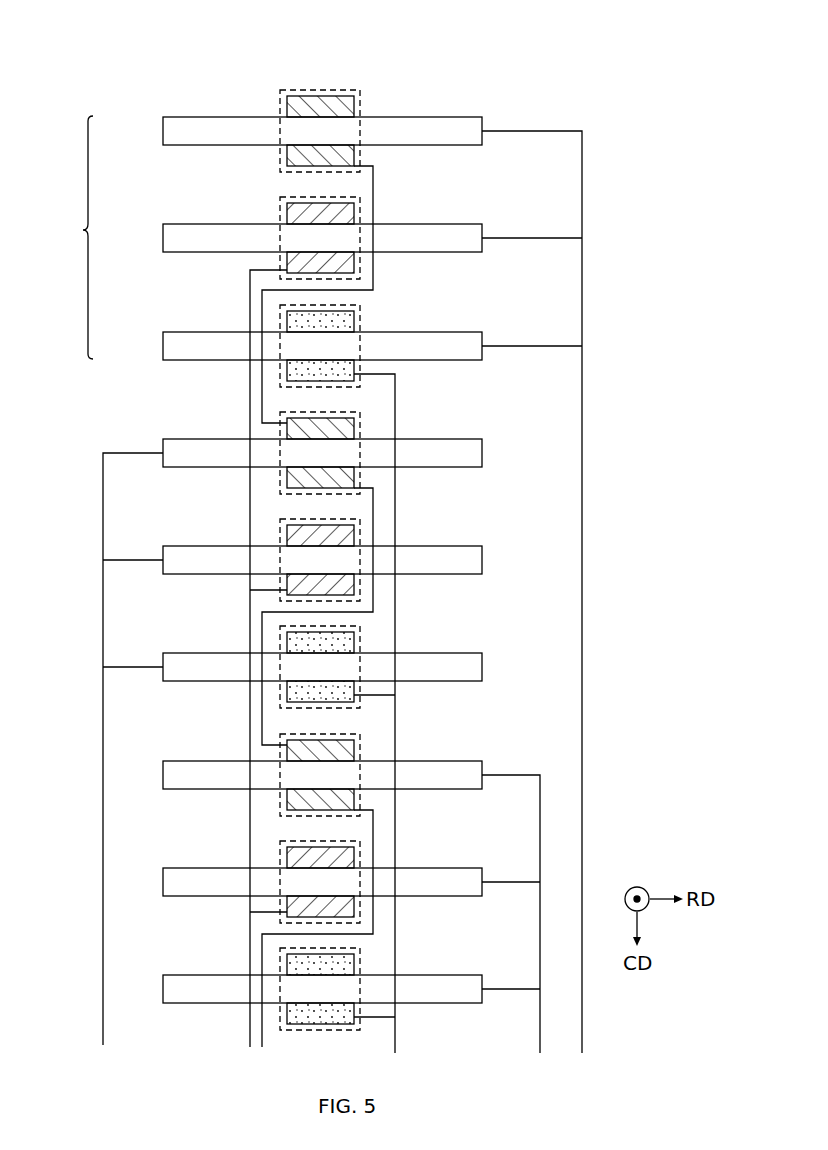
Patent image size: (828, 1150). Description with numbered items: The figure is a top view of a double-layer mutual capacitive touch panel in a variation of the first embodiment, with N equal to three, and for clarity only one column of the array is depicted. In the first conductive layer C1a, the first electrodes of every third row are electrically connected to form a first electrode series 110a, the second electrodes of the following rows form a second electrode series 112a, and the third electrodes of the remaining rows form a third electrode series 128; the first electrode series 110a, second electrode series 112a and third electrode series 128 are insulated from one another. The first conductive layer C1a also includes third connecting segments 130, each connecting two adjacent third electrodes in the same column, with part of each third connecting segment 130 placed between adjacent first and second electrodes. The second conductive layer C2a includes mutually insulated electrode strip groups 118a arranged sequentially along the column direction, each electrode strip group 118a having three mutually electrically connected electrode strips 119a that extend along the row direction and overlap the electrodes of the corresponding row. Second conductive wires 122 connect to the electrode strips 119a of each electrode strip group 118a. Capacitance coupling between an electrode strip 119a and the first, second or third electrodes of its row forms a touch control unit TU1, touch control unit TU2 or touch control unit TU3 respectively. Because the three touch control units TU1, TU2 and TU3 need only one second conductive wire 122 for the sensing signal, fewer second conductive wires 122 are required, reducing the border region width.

The electrode strip group 118a is at (256, 238).
The electrode strip 119a is at (163, 131).
The second conductive wire 122 is at (103, 620).
The third electrode series 128 is at (354, 103).
The first electrode series 110a is at (354, 211).
The second electrode series 112a is at (354, 319).
The third connecting segment 130 is at (373, 181).
The touch control unit TU1 is at (347, 560).
The touch control unit TU2 is at (335, 666).
The touch control unit TU3 is at (341, 453).
The first conductive layer C1a is at (335, 524).
The second conductive layer C2a is at (280, 527).